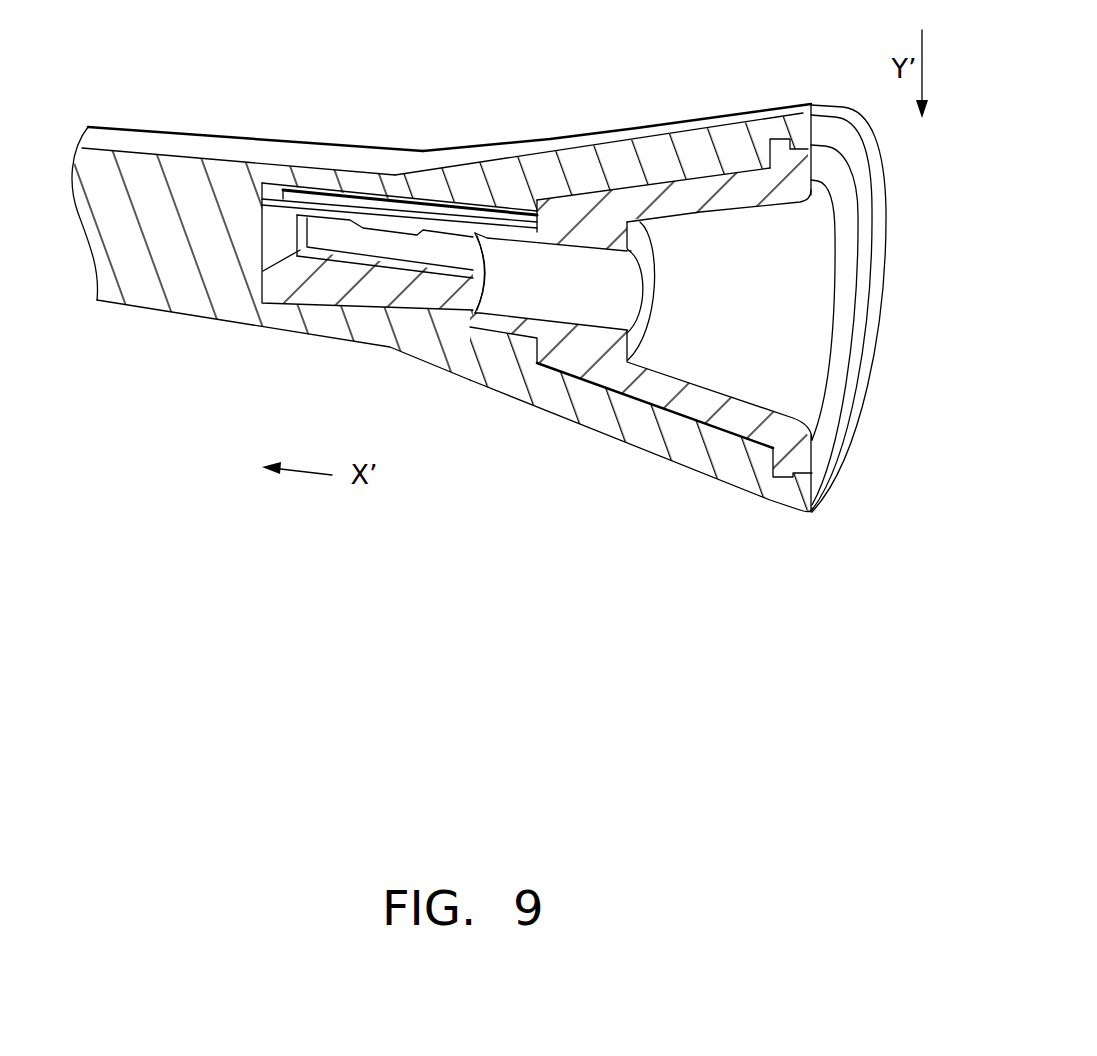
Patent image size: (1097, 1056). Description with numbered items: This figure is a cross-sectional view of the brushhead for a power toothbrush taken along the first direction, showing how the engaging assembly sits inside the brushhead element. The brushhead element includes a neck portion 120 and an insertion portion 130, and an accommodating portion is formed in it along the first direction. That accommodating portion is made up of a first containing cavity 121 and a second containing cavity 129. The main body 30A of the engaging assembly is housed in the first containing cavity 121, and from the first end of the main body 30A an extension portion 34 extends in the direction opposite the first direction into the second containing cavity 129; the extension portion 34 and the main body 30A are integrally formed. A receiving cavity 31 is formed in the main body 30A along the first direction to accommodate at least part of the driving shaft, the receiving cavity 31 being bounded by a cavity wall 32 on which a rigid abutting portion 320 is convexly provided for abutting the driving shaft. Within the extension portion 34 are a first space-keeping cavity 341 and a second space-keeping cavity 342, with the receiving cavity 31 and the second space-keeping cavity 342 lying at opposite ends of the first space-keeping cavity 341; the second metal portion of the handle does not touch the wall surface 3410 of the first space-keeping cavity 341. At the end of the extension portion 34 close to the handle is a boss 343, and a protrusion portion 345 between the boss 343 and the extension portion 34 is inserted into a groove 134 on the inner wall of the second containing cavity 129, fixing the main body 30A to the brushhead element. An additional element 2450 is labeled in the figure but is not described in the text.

The neck portion 120 is at (197, 148).
The first containing cavity 121 is at (425, 198).
The second containing cavity 129 is at (582, 190).
The insertion portion 130 is at (673, 128).
The groove 134 is at (748, 205).
The latching notch 2450 is at (732, 205).
The abutting portion 320 is at (363, 190).
The wall surface of the first space-keeping cavity 3410 is at (553, 200).
The main body 30A is at (300, 275).
The receiving cavity 31 is at (407, 248).
The cavity wall 32 is at (342, 268).
The first space-keeping cavity 341 is at (558, 297).
The extension portion 34 is at (657, 387).
The second space-keeping cavity 342 is at (738, 367).
The boss 343 is at (802, 457).
The protrusion portion 345 is at (783, 477).